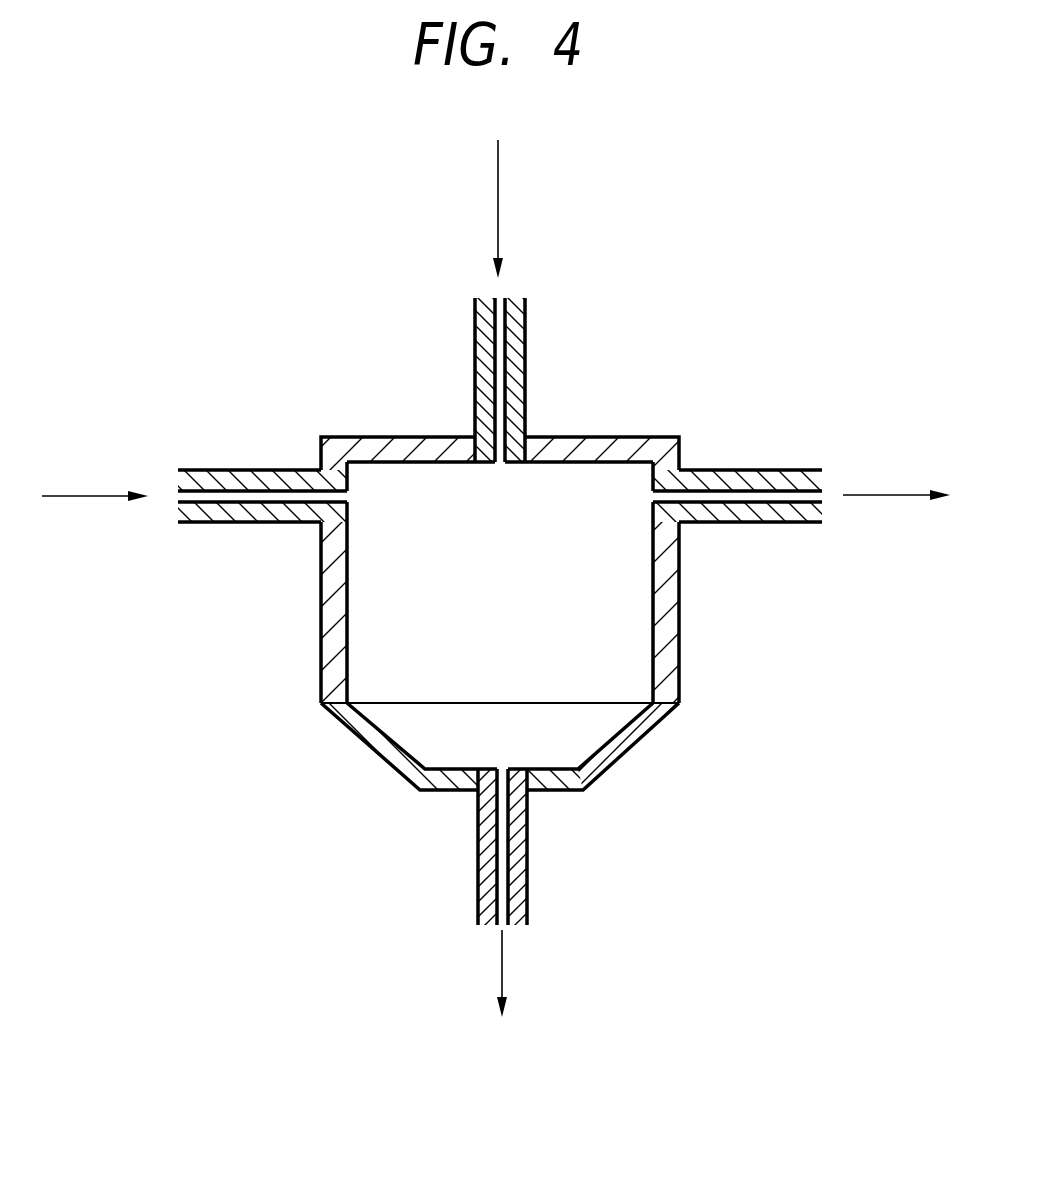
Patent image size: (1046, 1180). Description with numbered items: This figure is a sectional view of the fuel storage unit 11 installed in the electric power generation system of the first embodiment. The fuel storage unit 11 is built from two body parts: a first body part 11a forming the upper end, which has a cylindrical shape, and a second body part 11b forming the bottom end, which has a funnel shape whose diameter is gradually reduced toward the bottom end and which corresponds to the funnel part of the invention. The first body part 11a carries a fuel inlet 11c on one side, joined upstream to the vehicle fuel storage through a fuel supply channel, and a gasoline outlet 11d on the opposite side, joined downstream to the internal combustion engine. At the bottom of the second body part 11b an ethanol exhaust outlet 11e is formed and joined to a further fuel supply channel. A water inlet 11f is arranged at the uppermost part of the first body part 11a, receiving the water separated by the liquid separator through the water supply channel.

The fuel storage unit 11 is at (292, 610).
The first body part 11a is at (665, 600).
The second body part 11b is at (633, 730).
The fuel inlet 11c is at (238, 480).
The gasoline outlet 11d is at (745, 478).
The ethanol exhaust outlet 11e is at (518, 848).
The water inlet 11f is at (518, 367).